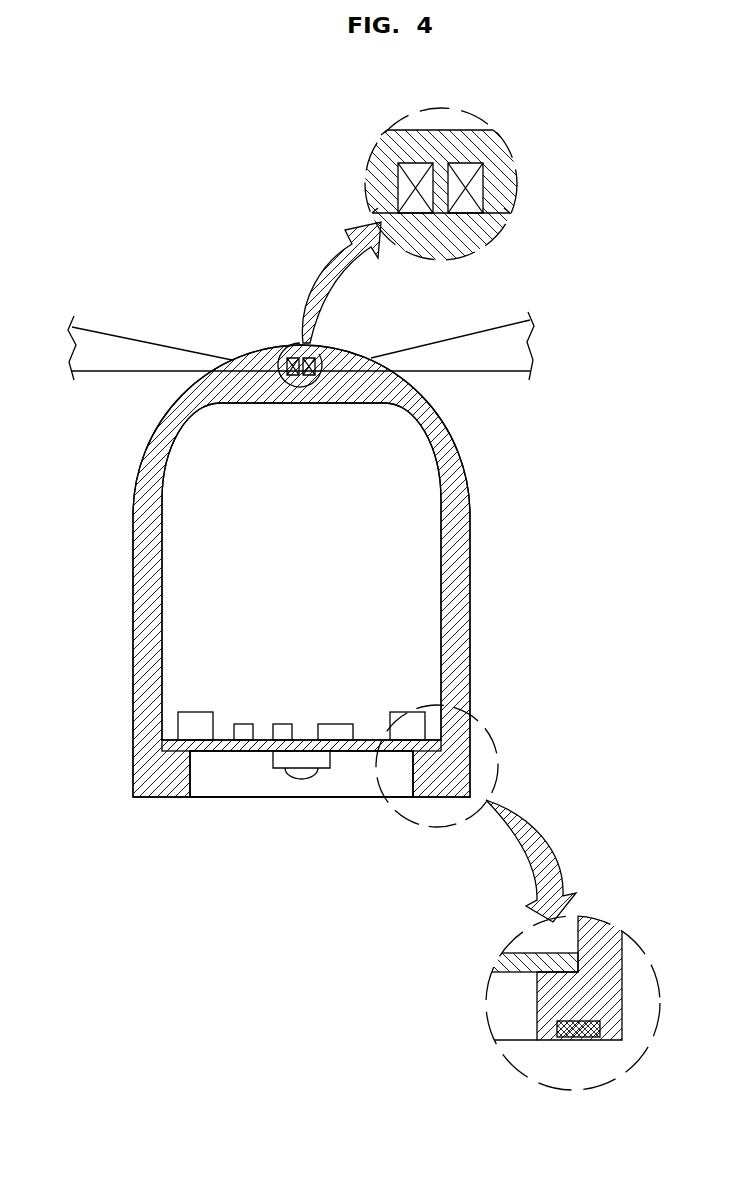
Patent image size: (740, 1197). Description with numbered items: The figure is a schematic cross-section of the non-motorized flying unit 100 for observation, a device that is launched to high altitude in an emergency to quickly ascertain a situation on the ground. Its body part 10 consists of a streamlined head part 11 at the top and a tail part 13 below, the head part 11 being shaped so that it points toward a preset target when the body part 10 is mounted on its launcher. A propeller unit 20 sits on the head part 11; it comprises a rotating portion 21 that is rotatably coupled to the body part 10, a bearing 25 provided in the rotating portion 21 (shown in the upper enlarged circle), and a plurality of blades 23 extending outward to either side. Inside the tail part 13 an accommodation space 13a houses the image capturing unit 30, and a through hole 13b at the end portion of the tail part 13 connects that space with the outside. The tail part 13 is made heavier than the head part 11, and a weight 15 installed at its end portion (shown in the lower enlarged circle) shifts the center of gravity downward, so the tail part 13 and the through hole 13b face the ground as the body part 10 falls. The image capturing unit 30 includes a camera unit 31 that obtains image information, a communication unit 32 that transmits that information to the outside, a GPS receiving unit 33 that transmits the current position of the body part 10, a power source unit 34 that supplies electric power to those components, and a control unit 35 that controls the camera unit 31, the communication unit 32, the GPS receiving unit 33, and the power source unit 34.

The non-motorized flying unit 100 is at (109, 166).
The body part 10 is at (631, 568).
The head part 11 is at (442, 418).
The tail part 13 is at (472, 667).
The accommodation space 13a is at (278, 705).
The through hole 13b is at (190, 775).
The weight 15 is at (587, 1037).
The propeller unit 20 is at (158, 242).
The rotating portion 21 is at (250, 365).
The blades 23 is at (183, 358).
The bearing 25 is at (290, 350).
The image capturing unit 30 is at (308, 823).
The camera unit 31 is at (332, 756).
The communication unit 32 is at (238, 752).
The GPS receiving unit 33 is at (275, 752).
The power source unit 34 is at (190, 726).
The control unit 35 is at (402, 727).